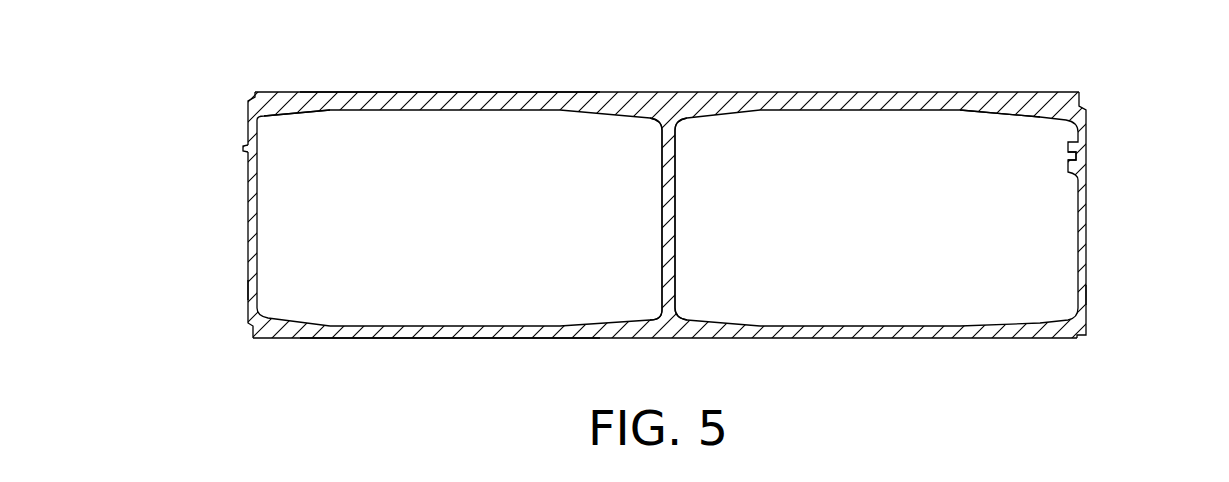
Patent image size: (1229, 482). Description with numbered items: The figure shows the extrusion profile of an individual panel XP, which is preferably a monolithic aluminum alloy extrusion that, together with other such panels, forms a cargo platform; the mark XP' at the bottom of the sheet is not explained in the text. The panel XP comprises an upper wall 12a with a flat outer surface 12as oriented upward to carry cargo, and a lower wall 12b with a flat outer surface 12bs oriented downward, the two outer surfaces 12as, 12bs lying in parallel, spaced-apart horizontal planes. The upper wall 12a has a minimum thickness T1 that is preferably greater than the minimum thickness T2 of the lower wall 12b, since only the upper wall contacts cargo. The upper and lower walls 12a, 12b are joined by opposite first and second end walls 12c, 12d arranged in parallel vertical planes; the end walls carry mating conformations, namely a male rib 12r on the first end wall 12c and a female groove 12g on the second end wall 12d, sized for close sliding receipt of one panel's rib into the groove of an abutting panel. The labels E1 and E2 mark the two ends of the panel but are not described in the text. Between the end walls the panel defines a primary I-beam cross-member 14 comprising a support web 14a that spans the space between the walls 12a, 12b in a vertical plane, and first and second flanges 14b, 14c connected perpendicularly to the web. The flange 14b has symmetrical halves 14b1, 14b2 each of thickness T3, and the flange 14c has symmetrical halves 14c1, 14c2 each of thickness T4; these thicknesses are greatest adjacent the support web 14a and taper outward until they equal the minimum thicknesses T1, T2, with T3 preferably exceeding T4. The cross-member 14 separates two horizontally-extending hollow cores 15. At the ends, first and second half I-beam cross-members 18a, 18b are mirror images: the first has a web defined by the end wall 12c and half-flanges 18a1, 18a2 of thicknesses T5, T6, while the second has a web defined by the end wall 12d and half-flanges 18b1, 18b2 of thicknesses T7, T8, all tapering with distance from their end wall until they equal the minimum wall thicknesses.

The upper wall 12a is at (545, 92).
The flat outer surface of upper wall 12as is at (453, 90).
The lower wall 12b is at (543, 340).
The flat outer surface of lower wall 12bs is at (453, 340).
The first end wall 12c is at (248, 216).
The second end wall 12d is at (1087, 232).
The male rib 12r is at (245, 148).
The female groove 12g is at (1078, 158).
The first end E1 is at (248, 285).
The second end E2 is at (1087, 295).
The primary I-beam cross-member 14 is at (690, 94).
The support web 14a is at (675, 235).
The first flange 14b is at (698, 108).
The first half of first flange 14b1 is at (627, 110).
The second half of first flange 14b2 is at (738, 110).
The second flange 14c is at (686, 323).
The first half of second flange 14c1 is at (623, 325).
The second half of second flange 14c2 is at (731, 323).
The hollow core 15 is at (428, 292).
The first half I-beam cross-member 18a is at (301, 90).
The first half-flange of first half I-beam cross-member 18a1 is at (292, 106).
The second half-flange of first half I-beam cross-member 18a2 is at (290, 323).
The second half I-beam cross-member 18b is at (1052, 108).
The first half-flange of second half I-beam cross-member 18b1 is at (1027, 116).
The second half-flange of second half I-beam cross-member 18b2 is at (1030, 323).
The minimum thickness of upper wall T1 is at (891, 48).
The minimum thickness of lower wall T2 is at (891, 385).
The thickness of first flange halves T3 is at (641, 47).
The thickness of second flange halves T4 is at (640, 385).
The thickness of first half-flange T5 is at (267, 45).
The thickness of second half-flange T6 is at (267, 382).
The thickness of first half-flange of second half I-beam T7 is at (1047, 50).
The thickness of second half-flange of second half I-beam T8 is at (1047, 385).
The panel XP is at (1154, 100).
The cross-section plane XP' is at (810, 477).